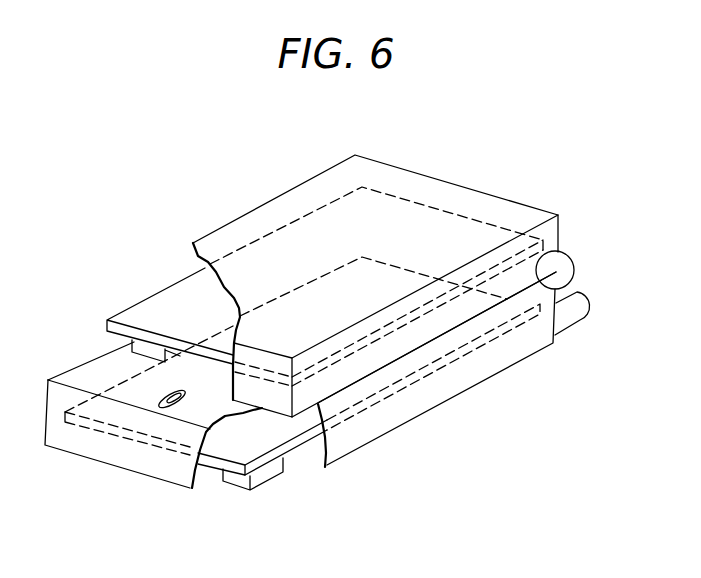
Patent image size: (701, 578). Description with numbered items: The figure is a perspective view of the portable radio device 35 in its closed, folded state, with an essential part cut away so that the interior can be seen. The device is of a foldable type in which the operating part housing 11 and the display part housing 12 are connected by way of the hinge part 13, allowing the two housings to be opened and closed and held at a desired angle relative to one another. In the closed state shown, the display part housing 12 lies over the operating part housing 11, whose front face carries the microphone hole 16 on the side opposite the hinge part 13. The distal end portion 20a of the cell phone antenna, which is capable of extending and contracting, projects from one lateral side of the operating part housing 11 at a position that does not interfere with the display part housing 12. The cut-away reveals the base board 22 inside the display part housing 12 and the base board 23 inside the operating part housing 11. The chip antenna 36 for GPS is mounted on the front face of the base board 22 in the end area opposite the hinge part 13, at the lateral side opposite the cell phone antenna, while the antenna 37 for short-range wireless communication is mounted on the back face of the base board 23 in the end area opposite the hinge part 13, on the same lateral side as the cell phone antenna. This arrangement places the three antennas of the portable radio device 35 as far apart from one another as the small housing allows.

The operating part housing 11 is at (383, 418).
The display part housing 12 is at (274, 217).
The hinge part 13 is at (560, 268).
The microphone hole 16 is at (172, 406).
The distal end portion of the antenna 20a is at (573, 308).
The base board 22 is at (172, 299).
The base board 23 is at (233, 447).
The portable radio device 35 is at (448, 176).
The chip antenna for GPS 36 is at (130, 350).
The antenna for short-range wireless communication 37 is at (267, 477).